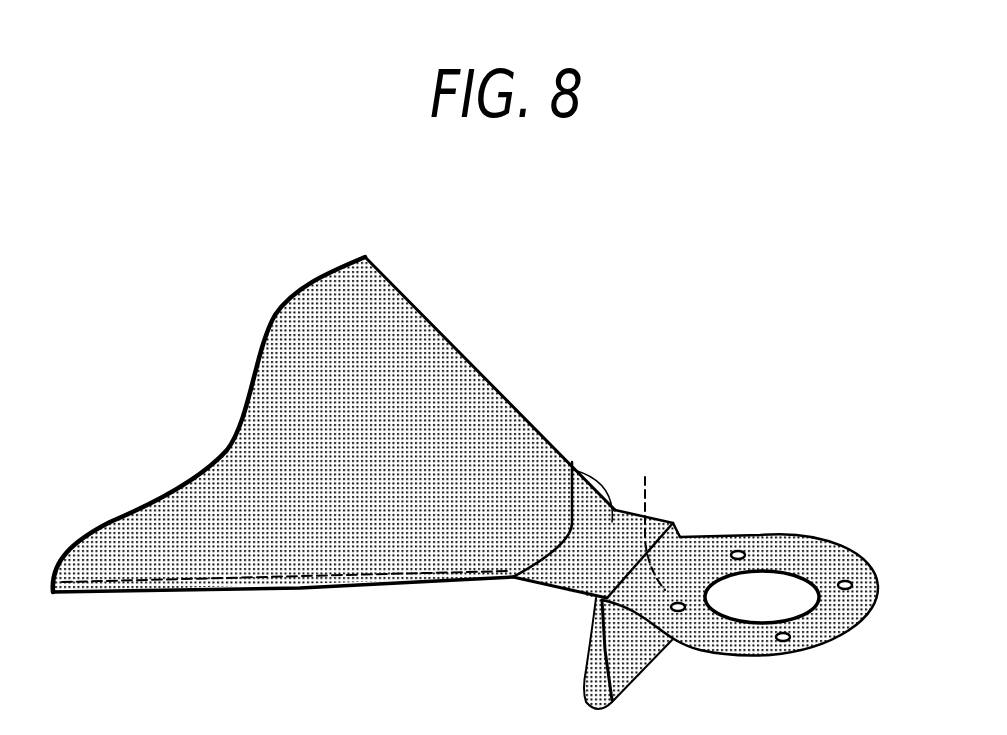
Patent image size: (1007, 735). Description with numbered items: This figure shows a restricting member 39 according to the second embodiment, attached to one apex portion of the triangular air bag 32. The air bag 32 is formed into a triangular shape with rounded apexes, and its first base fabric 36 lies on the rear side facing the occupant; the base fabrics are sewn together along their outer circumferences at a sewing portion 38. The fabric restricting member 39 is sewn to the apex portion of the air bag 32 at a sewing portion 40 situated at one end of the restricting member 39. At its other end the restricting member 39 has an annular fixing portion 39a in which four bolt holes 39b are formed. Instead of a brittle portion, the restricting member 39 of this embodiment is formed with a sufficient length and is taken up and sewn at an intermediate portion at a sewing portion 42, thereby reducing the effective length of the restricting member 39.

The air bag 32 is at (490, 488).
The first base fabric 36 is at (393, 542).
The sewing portion 38 is at (268, 586).
The sewing portion 40 is at (570, 470).
The sewing portion 42 is at (646, 515).
The restricting member 39 is at (732, 532).
The annular fixing portion 39a is at (712, 676).
The bolt holes 39b is at (745, 545).